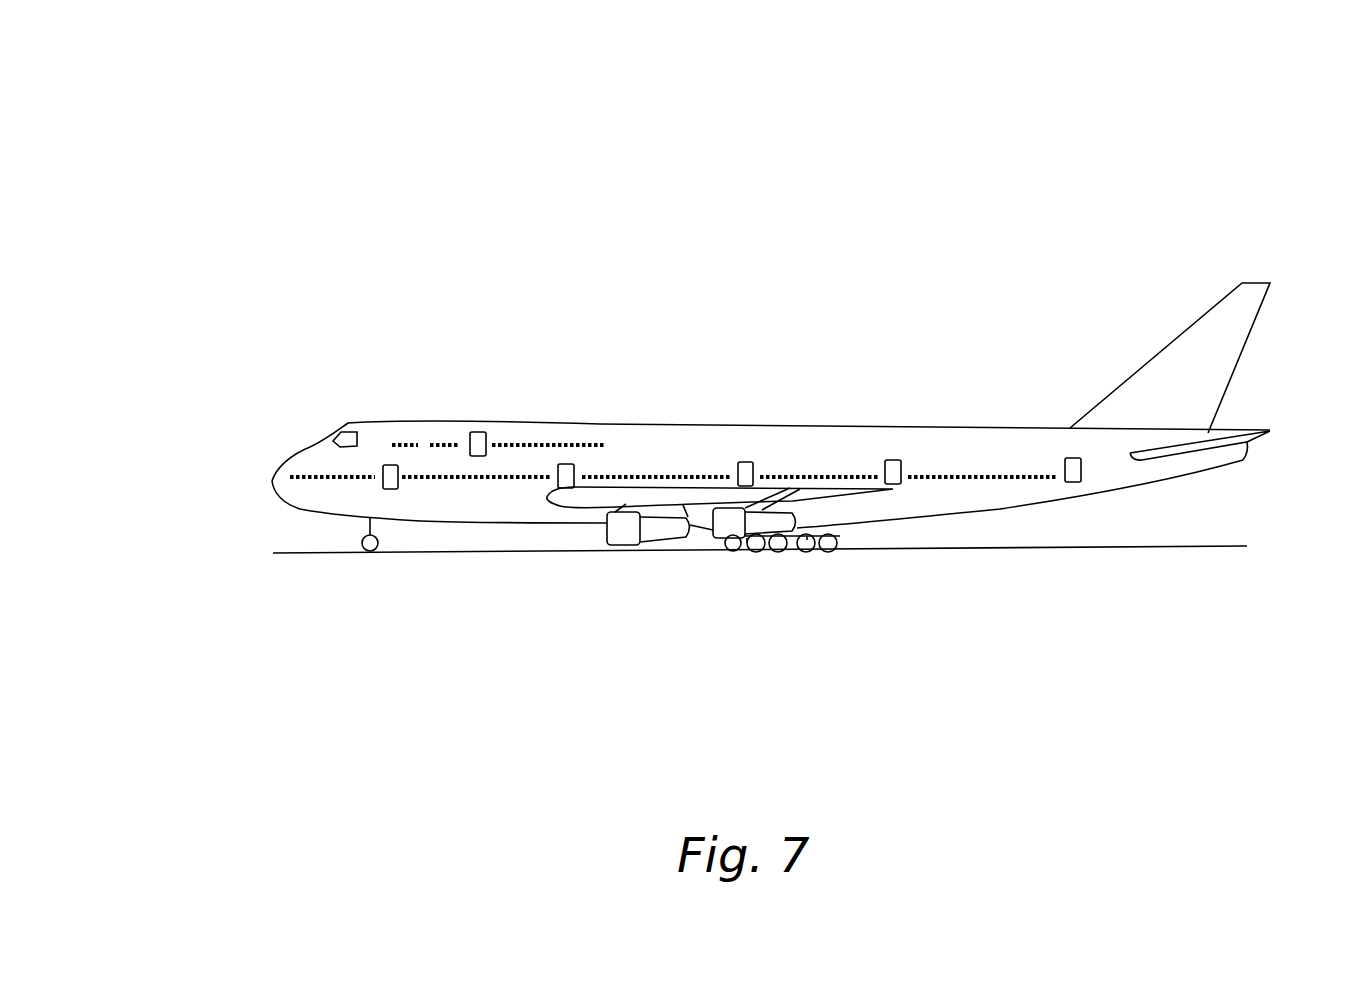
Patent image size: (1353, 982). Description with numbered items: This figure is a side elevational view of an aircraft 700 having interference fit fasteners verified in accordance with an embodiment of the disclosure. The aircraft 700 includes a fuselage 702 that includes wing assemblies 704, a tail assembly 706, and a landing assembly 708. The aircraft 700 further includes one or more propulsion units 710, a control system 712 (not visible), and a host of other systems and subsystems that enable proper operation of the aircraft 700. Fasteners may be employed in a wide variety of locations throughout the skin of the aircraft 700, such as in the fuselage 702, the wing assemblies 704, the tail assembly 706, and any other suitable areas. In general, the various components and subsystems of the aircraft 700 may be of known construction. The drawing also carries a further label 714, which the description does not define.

The aircraft 700 is at (251, 116).
The fuselage 702 is at (931, 517).
The wing assemblies 704 is at (577, 498).
The tail assembly 706 is at (1158, 320).
The landing assembly 708 is at (763, 574).
The propulsion units 710 is at (625, 537).
The control system 712 is at (279, 523).
The cockpit 714 is at (294, 407).